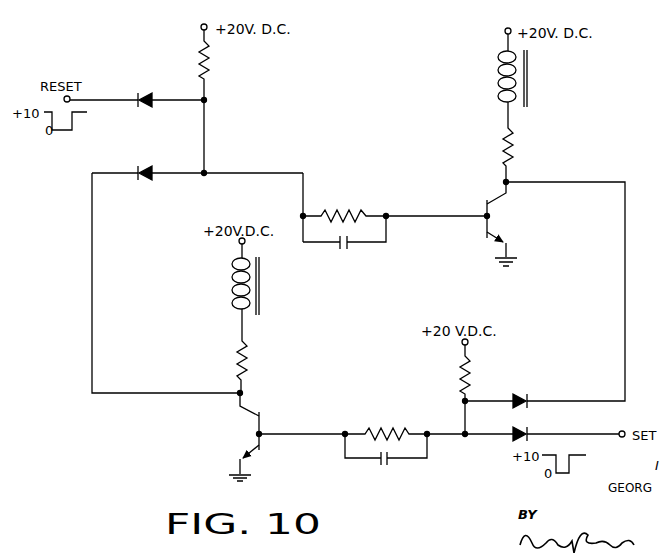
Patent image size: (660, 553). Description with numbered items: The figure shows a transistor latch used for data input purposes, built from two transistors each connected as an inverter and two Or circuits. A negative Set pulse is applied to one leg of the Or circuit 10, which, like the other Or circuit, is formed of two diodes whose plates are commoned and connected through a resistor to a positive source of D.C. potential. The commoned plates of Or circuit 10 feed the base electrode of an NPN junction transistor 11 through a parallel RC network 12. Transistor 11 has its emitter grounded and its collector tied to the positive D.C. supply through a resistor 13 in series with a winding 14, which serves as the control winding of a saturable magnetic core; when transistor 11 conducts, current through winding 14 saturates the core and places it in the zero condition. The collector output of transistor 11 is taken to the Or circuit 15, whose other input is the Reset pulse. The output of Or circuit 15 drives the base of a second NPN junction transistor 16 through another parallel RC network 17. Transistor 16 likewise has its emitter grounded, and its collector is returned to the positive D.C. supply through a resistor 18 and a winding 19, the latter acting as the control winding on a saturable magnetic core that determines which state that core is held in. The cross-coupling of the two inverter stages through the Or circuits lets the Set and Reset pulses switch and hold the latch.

The Or circuit 10 is at (488, 446).
The NPN junction transistor 11 is at (238, 421).
The parallel RC network 12 is at (401, 467).
The resistor 13 is at (250, 372).
The winding 14 is at (236, 285).
The Or circuit 15 is at (170, 182).
The NPN junction transistor 16 is at (486, 193).
The parallel RC network 17 is at (341, 205).
The resistor 18 is at (510, 163).
The winding 19 is at (503, 79).